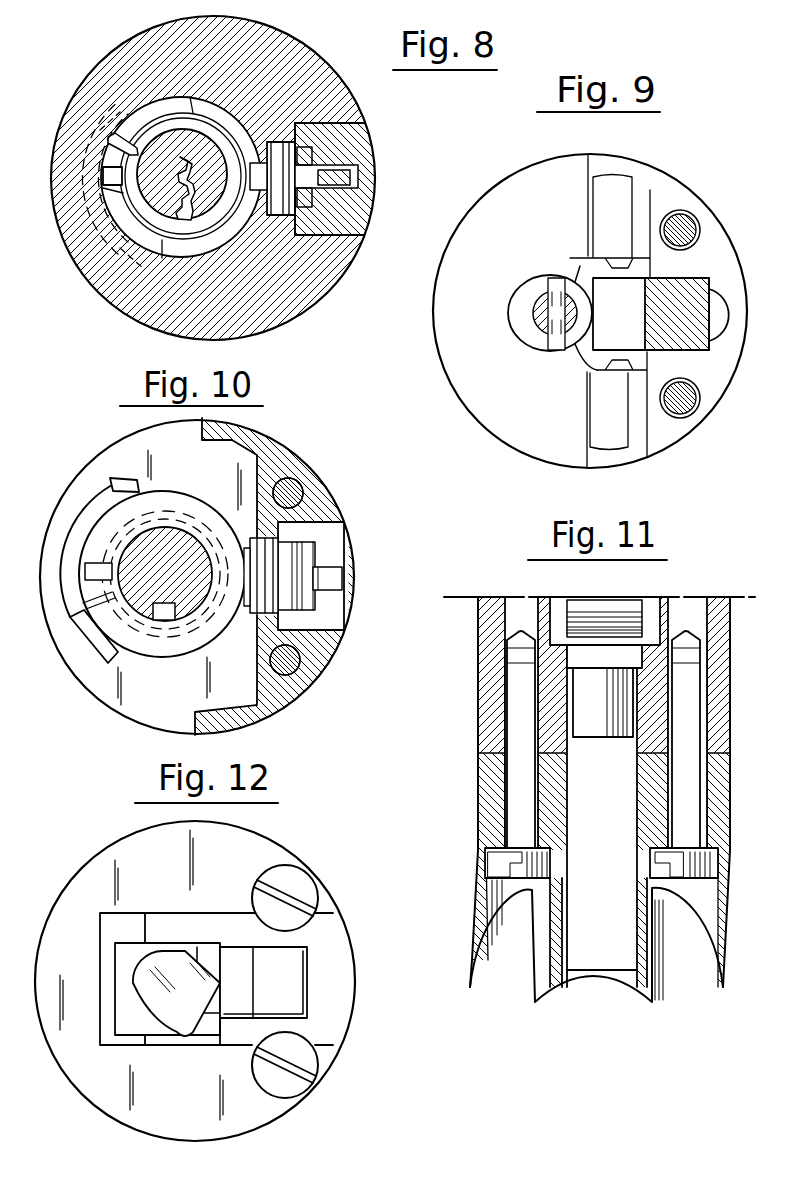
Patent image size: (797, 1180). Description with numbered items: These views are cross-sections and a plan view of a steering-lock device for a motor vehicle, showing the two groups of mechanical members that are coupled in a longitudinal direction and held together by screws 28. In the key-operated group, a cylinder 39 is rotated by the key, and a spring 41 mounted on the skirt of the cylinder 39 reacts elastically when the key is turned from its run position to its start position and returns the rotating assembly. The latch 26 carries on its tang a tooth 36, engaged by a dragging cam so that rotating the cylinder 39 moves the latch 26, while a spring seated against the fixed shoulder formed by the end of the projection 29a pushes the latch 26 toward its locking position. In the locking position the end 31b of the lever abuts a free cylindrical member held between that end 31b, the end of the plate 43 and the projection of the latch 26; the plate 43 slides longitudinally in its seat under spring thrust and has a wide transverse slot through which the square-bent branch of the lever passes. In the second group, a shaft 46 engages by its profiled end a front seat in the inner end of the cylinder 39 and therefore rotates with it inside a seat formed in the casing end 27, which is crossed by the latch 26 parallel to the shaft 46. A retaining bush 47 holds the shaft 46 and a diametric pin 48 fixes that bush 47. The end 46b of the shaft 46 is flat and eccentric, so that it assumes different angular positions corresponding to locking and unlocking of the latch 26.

In FIG. 9, the latch 26 is at (630, 317).
In FIG. 12, the latch 26 is at (280, 980).
In FIG. 9, the end of casing 27 is at (638, 215).
In FIG. 11, the end of casing 27 is at (724, 934).
In FIG. 12, the end of casing 27 is at (112, 1083).
In FIG. 9, the screws 28 is at (683, 230).
In FIG. 11, the screws 28 is at (513, 792).
In FIG. 12, the screws 28 is at (293, 880).
In FIG. 8, the projection 29a is at (355, 147).
In FIG. 8, the end of lever 31b is at (355, 173).
In FIG. 8, the tooth 36 is at (258, 186).
In FIG. 8, the cylinder 39 is at (97, 240).
In FIG. 8, the spring 41 is at (124, 141).
In FIG. 8, the plate 43 is at (305, 198).
In FIG. 9, the shaft 46 is at (543, 313).
In FIG. 12, the end of shaft 46b is at (143, 973).
In FIG. 9, the retaining bush 47 is at (533, 293).
In FIG. 9, the diametric pin 48 is at (557, 283).